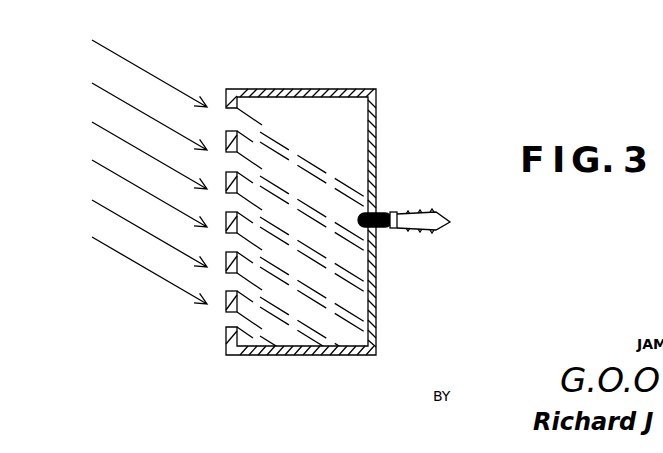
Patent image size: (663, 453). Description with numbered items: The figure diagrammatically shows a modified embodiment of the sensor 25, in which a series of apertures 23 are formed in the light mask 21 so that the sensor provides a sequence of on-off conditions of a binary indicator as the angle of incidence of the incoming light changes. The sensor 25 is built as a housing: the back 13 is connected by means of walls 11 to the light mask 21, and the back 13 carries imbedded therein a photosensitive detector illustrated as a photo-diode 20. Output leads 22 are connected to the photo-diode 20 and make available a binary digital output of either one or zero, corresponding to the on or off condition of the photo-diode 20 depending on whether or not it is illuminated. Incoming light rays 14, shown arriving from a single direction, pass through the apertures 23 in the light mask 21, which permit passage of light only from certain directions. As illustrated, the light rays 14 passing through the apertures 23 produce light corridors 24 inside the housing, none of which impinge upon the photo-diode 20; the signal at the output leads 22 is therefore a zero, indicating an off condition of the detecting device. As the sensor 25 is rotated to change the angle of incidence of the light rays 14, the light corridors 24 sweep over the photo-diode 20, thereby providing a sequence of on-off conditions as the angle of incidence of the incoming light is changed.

The walls 11 is at (300, 88).
The back 13 is at (377, 146).
The light rays 14 is at (106, 48).
The photo-diode 20 is at (385, 213).
The light mask 21 is at (225, 94).
The output leads 22 is at (435, 221).
The apertures 23 is at (224, 329).
The light corridors 24 is at (284, 140).
The sensor 25 is at (382, 83).